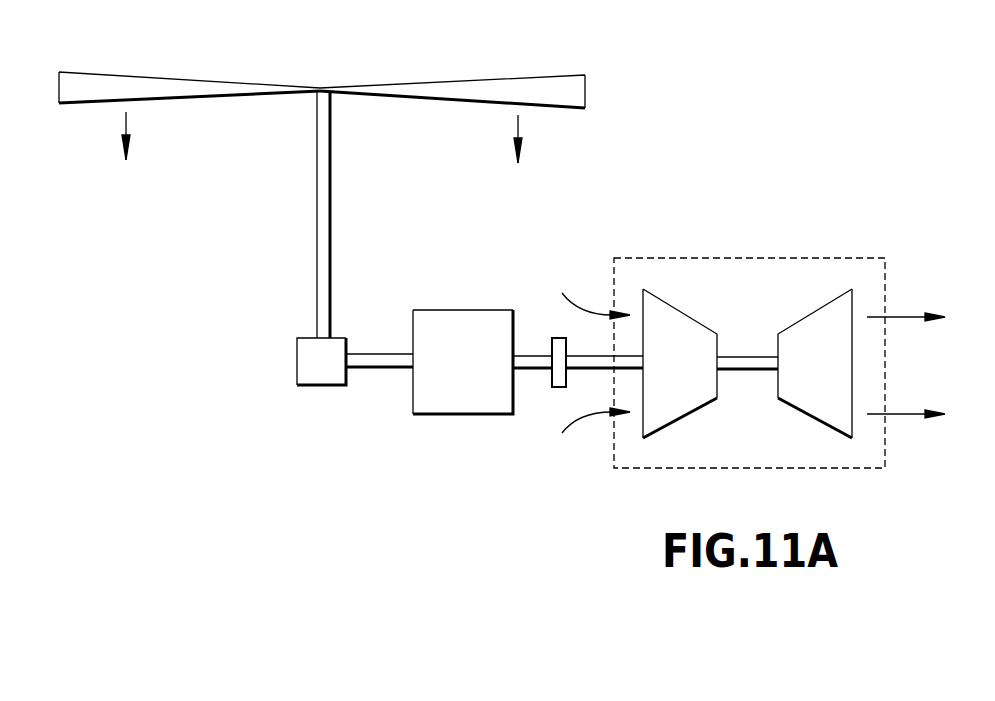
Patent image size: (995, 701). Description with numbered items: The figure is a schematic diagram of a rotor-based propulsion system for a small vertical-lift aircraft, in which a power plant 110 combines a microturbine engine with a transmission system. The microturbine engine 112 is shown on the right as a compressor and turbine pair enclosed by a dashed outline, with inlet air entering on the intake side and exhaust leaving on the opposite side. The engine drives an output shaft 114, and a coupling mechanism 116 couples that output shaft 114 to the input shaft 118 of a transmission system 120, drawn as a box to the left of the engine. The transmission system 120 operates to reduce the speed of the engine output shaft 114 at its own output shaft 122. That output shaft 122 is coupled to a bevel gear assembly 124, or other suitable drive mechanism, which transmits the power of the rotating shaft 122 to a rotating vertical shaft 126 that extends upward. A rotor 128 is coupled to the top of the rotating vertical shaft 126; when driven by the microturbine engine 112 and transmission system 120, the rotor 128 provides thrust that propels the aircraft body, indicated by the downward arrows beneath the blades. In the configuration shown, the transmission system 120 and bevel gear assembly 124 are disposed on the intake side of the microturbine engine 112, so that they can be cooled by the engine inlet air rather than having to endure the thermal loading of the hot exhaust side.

The power plant 110 is at (708, 200).
The microturbine engine 112 is at (792, 258).
The output shaft 114 is at (605, 371).
The coupling mechanism 116 is at (553, 340).
The input shaft 118 is at (536, 370).
The transmission system 120 is at (441, 416).
The output shaft 122 is at (386, 370).
The bevel gear assembly 124 is at (308, 386).
The rotating vertical shaft 126 is at (331, 217).
The rotor 128 is at (215, 80).